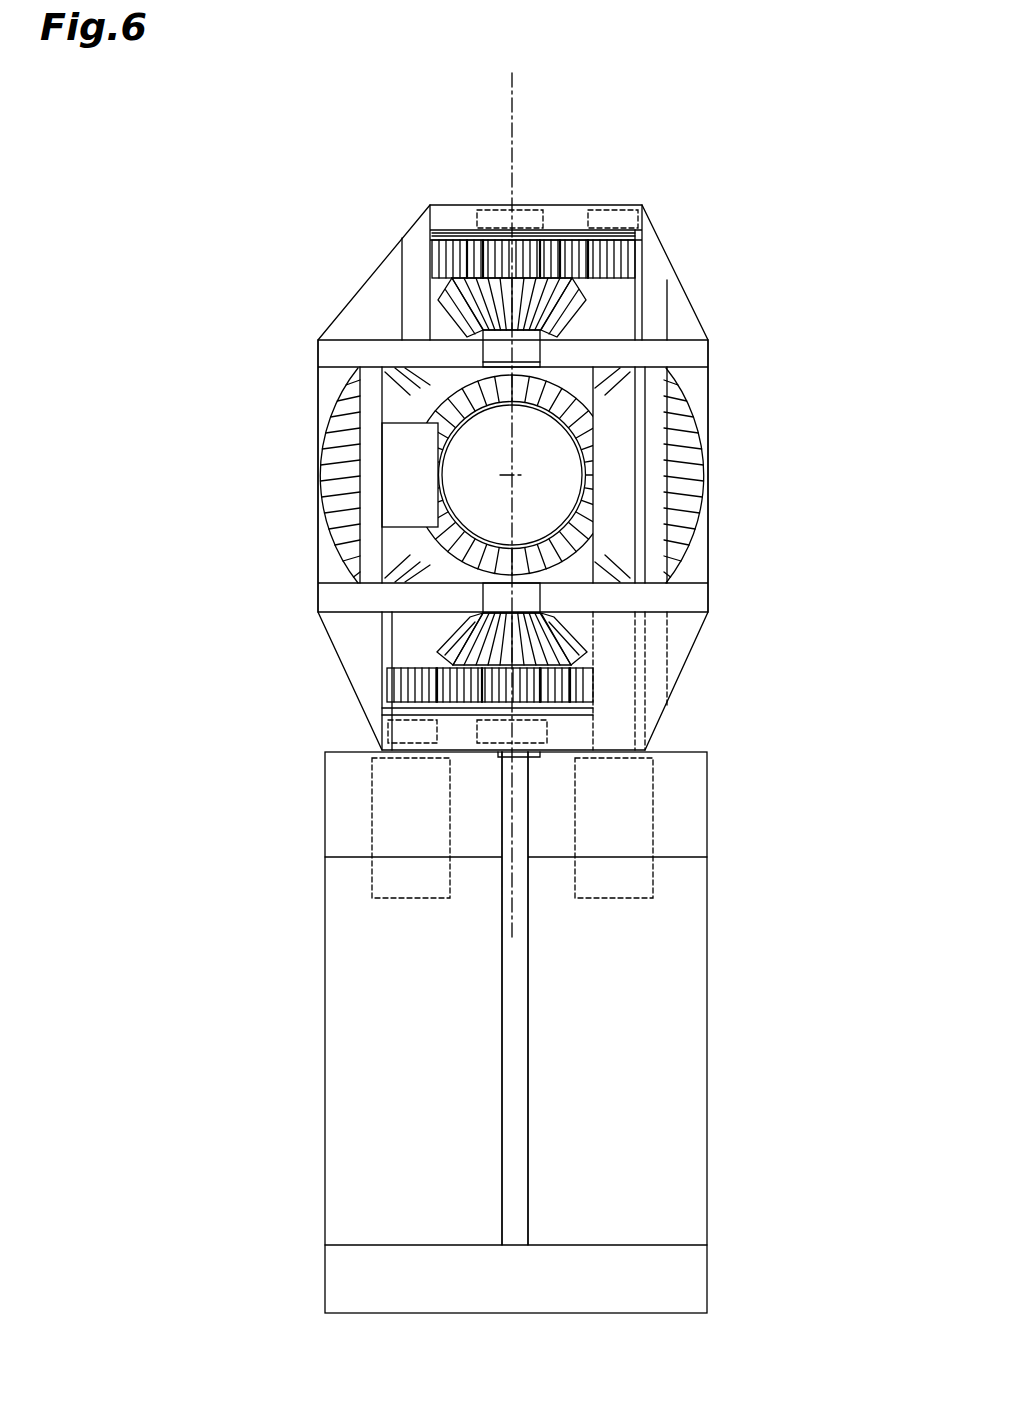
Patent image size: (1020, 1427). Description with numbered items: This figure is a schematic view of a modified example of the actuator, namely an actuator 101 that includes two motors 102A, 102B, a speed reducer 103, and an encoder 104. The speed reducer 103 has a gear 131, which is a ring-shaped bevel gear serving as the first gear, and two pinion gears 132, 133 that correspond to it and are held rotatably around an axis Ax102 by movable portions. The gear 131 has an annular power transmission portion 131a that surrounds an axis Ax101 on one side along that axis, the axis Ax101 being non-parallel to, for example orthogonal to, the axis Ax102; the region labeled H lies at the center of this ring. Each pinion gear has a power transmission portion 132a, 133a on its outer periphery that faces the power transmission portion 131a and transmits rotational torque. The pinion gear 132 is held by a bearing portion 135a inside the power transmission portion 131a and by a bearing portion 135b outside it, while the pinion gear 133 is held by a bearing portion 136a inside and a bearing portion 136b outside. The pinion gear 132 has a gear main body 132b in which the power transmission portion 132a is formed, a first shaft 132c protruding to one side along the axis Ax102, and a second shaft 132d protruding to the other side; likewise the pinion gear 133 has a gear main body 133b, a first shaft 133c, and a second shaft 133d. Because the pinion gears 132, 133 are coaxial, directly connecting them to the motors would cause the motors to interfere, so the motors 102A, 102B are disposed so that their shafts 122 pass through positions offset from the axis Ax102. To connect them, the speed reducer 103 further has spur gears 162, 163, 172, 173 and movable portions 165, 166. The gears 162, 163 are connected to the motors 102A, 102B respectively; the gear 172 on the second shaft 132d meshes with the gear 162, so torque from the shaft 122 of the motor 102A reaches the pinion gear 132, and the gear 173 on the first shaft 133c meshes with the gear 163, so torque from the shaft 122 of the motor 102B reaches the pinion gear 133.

The actuator 101 is at (777, 175).
The motor 102A is at (372, 810).
The motor 102B is at (658, 807).
The speed reducer 103 is at (727, 410).
The encoder 104 is at (393, 473).
The shaft 122 is at (613, 445).
The gear 131 is at (335, 380).
The power transmission portion 131a is at (677, 502).
The pinion gear 132 is at (590, 620).
The power transmission portion 132a is at (420, 578).
The gear main body 132b is at (578, 648).
The first shaft 132c is at (545, 569).
The second shaft 132d is at (560, 712).
The pinion gear 133 is at (458, 300).
The power transmission portion 133a is at (600, 300).
The gear main body 133b is at (440, 263).
The first shaft 133c is at (470, 325).
The second shaft 133d is at (458, 205).
The bearing portion 135a is at (490, 633).
The bearing portion 135b is at (497, 752).
The bearing portion 136a is at (520, 363).
The bearing portion 136b is at (520, 203).
The gear 162 is at (388, 687).
The gear 163 is at (647, 258).
The movable portion 165 is at (412, 643).
The movable portion 166 is at (618, 203).
The gear 172 is at (593, 677).
The gear 173 is at (430, 250).
The axis Ax101 is at (514, 476).
The axis Ax102 is at (510, 493).
The hollow portion H is at (546, 464).